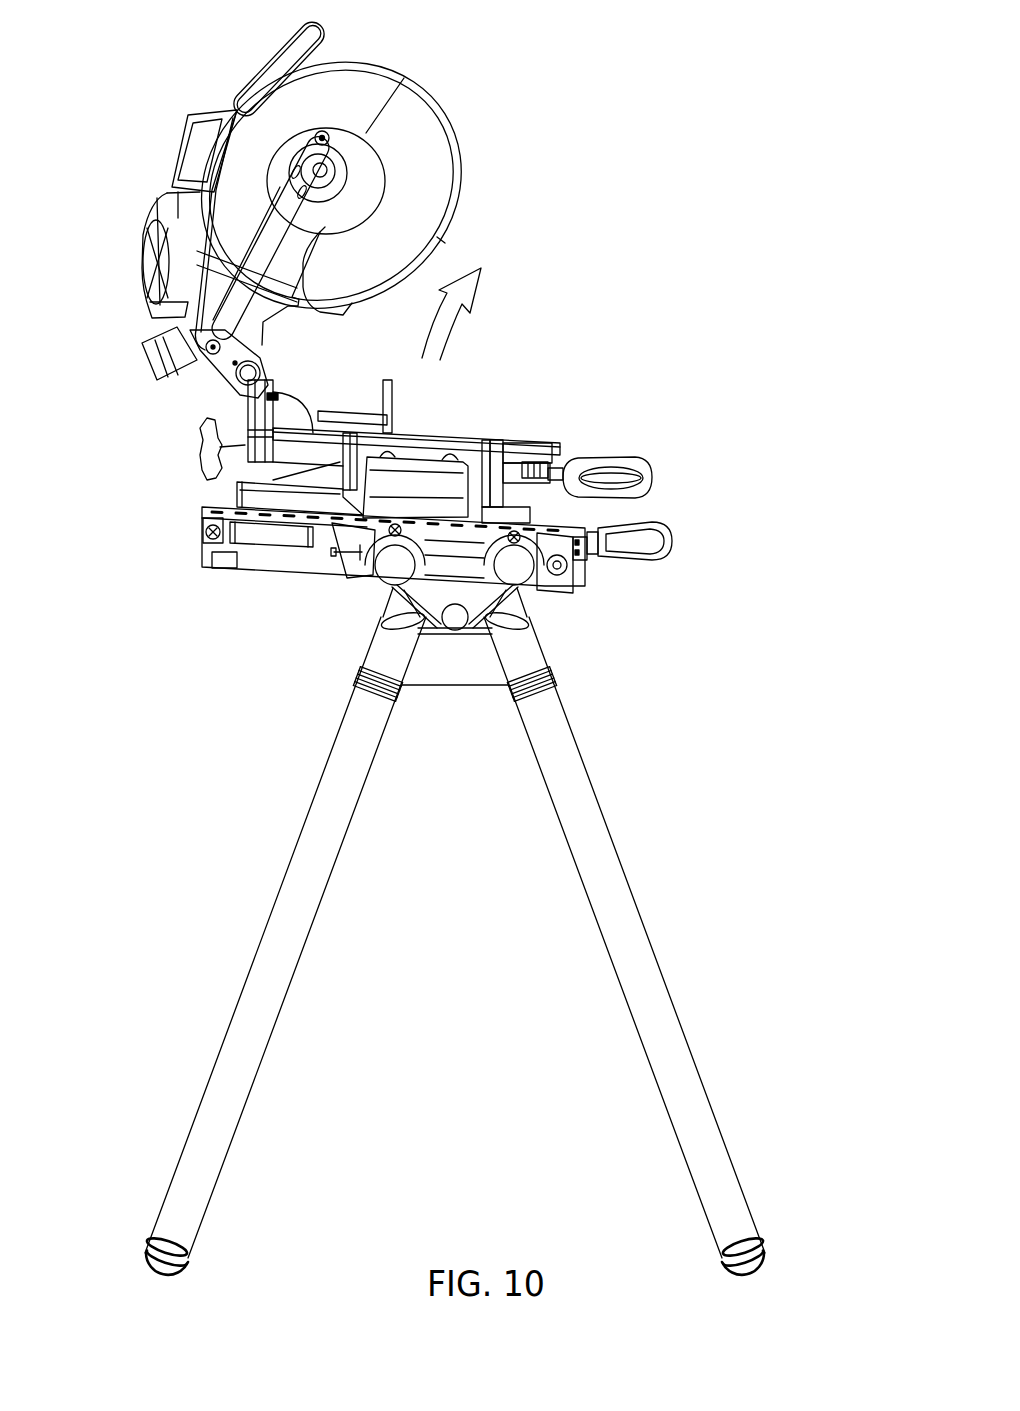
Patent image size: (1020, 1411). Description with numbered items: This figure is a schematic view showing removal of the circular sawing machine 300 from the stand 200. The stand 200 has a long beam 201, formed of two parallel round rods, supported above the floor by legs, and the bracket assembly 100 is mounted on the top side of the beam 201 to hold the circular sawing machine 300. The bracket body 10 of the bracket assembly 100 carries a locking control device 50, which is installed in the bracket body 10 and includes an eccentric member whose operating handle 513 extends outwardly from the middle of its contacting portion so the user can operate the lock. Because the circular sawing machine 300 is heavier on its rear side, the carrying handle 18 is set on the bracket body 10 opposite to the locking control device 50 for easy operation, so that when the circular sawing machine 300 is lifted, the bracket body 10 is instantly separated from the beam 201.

The bracket body 10 is at (439, 354).
The carrying handle 18 is at (273, 540).
The locking control device 50 is at (595, 570).
The bracket assembly 100 is at (338, 601).
The stand 200 is at (622, 818).
The beam 201 is at (388, 570).
The circular sawing machine 300 is at (462, 115).
The operating handle 513 is at (673, 530).